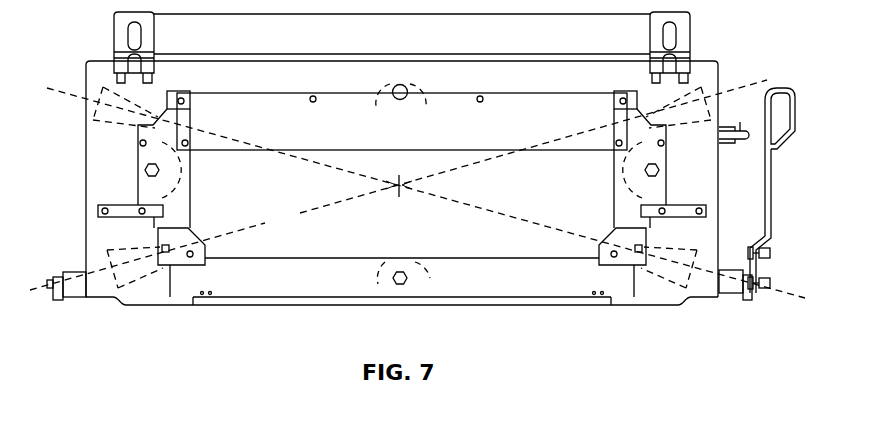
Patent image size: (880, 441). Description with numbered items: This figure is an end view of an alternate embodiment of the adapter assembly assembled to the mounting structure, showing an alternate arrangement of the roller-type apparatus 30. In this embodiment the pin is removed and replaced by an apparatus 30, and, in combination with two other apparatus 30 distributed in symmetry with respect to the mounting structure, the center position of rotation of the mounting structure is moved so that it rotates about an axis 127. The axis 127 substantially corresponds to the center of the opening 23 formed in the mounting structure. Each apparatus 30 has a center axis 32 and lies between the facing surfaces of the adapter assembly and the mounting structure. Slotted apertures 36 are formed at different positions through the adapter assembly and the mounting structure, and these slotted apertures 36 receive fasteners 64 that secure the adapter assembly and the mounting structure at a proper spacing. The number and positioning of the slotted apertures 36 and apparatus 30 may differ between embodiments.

The opening 23 is at (296, 231).
The apparatus 30 is at (140, 275).
The center axis 32 is at (68, 94).
The slotted apertures 36 is at (182, 175).
The fasteners 64 is at (401, 284).
The axis 127 is at (402, 188).